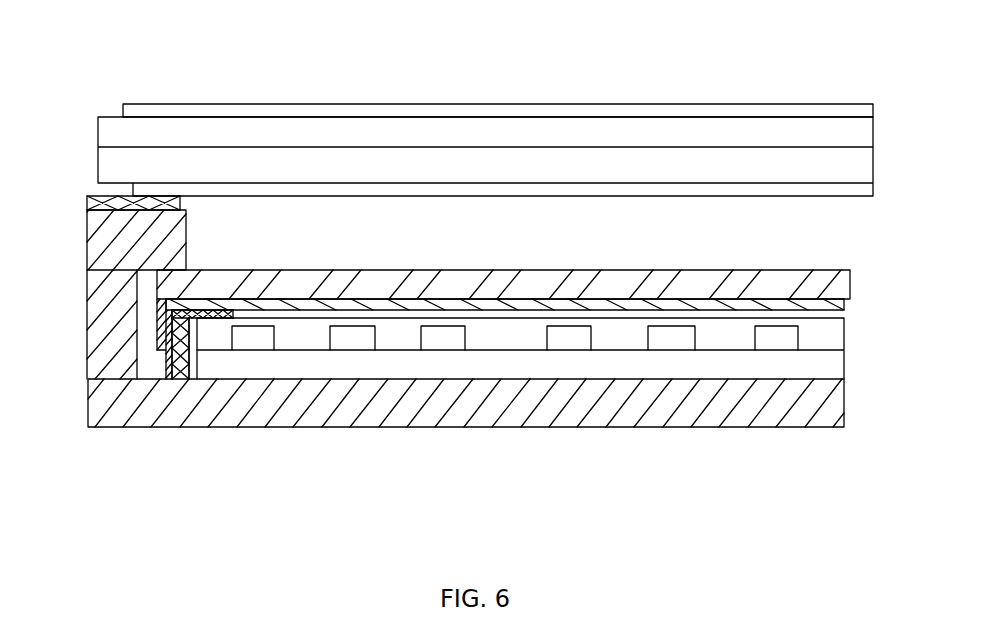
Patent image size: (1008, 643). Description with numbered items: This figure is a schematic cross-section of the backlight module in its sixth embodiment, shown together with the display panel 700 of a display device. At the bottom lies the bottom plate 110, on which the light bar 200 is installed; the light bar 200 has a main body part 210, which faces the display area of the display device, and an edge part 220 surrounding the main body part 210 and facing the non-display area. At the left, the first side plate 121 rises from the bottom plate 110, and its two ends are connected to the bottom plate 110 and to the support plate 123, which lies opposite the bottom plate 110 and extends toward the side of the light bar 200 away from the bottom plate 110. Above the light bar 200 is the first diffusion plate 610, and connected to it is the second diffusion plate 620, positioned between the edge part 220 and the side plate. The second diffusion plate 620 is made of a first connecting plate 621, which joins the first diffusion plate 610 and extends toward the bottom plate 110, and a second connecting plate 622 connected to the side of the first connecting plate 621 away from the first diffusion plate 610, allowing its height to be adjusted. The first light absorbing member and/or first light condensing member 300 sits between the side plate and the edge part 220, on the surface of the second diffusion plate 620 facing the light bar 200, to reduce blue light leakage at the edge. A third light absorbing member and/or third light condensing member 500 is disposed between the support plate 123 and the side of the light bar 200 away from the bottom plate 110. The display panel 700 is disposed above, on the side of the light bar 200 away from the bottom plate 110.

The display panel 700 is at (478, 162).
The third light absorbing member and/or third light condensing member 500 is at (222, 310).
The support plate 123 is at (88, 234).
The first side plate 121 is at (100, 328).
The second diffusion plate 620 is at (137, 409).
The first connecting plate 621 is at (160, 327).
The second connecting plate 622 is at (165, 357).
The first light absorbing member and/or first light condensing member 300 is at (185, 355).
The light bar 200 is at (520, 416).
The main body part 210 is at (297, 335).
The edge part 220 is at (208, 342).
The first diffusion plate 610 is at (386, 302).
The bottom plate 110 is at (493, 398).